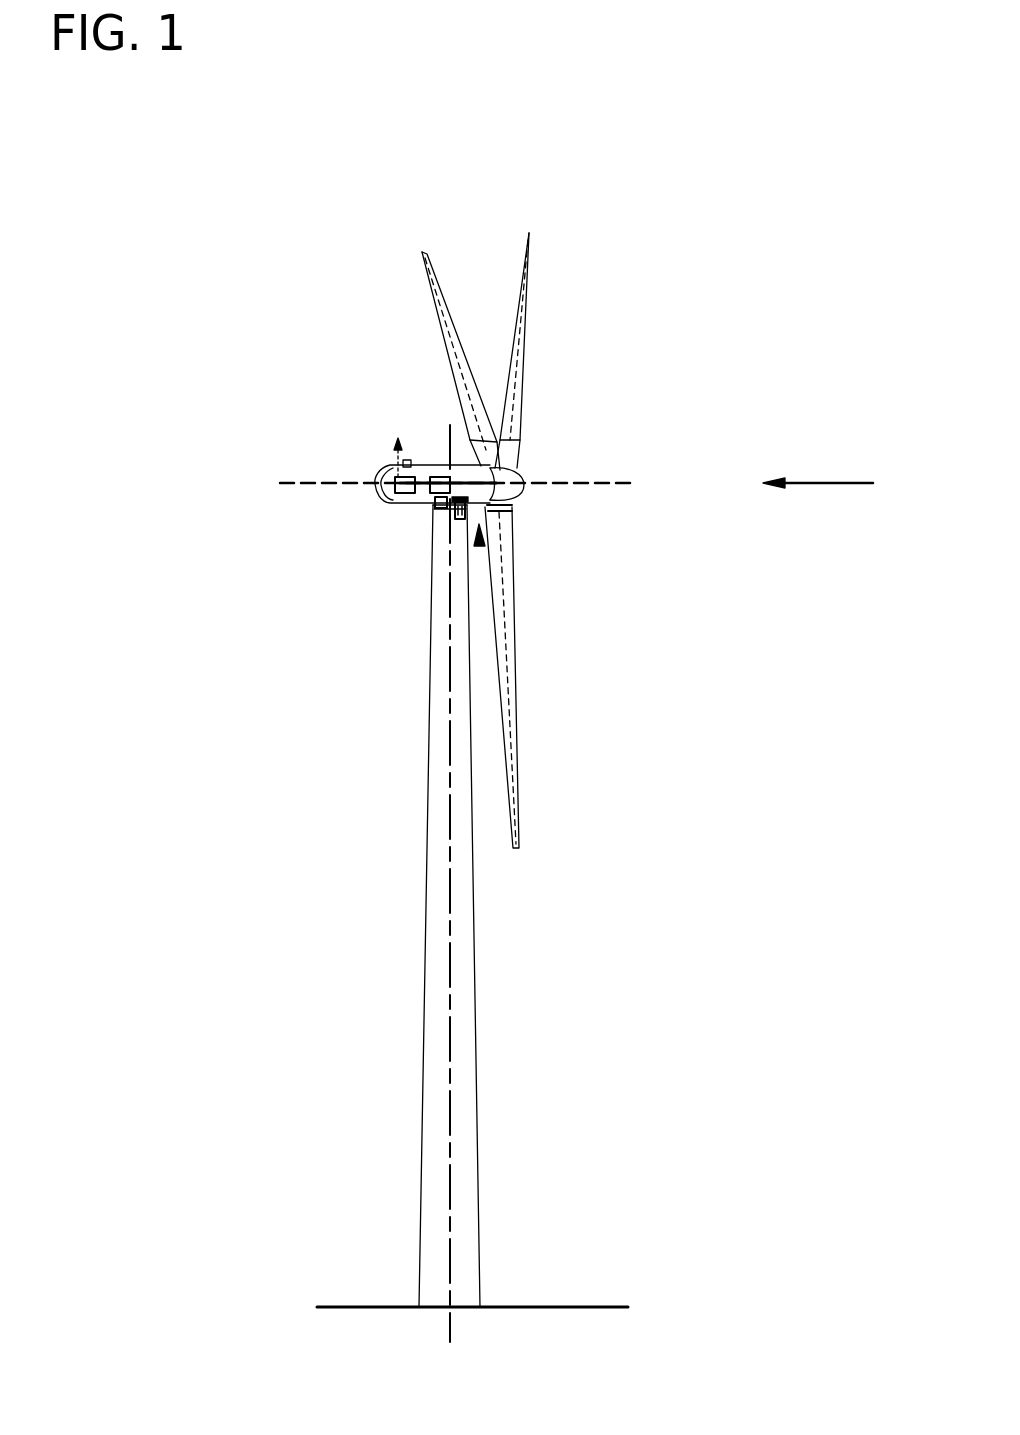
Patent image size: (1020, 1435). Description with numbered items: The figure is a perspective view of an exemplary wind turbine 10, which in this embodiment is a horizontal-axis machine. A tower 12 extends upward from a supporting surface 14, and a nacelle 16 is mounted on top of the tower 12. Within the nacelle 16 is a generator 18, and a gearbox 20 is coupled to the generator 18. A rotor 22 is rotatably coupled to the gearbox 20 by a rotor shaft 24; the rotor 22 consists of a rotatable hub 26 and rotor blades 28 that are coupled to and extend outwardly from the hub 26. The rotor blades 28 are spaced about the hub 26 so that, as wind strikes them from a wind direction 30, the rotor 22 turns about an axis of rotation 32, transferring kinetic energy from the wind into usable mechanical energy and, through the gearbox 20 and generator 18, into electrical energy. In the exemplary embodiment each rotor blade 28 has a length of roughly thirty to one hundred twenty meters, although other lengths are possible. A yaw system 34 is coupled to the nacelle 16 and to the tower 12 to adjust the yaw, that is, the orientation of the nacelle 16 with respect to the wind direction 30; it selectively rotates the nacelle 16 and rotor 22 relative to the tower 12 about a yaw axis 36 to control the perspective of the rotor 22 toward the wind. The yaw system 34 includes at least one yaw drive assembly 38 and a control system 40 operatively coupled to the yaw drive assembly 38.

The wind turbine 10 is at (189, 248).
The tower 12 is at (423, 1070).
The supporting surface 14 is at (378, 1306).
The nacelle 16 is at (428, 463).
The generator 18 is at (393, 466).
The gearbox 20 is at (437, 505).
The rotor 22 is at (555, 420).
The rotor shaft 24 is at (472, 440).
The hub 26 is at (513, 476).
The rotor blade 28 is at (443, 327).
The wind direction 30 is at (841, 482).
The axis of rotation 32 is at (592, 485).
The yaw system 34 is at (481, 545).
The yaw axis 36 is at (450, 1007).
The yaw drive assembly 38 is at (437, 515).
The control system 40 is at (433, 510).